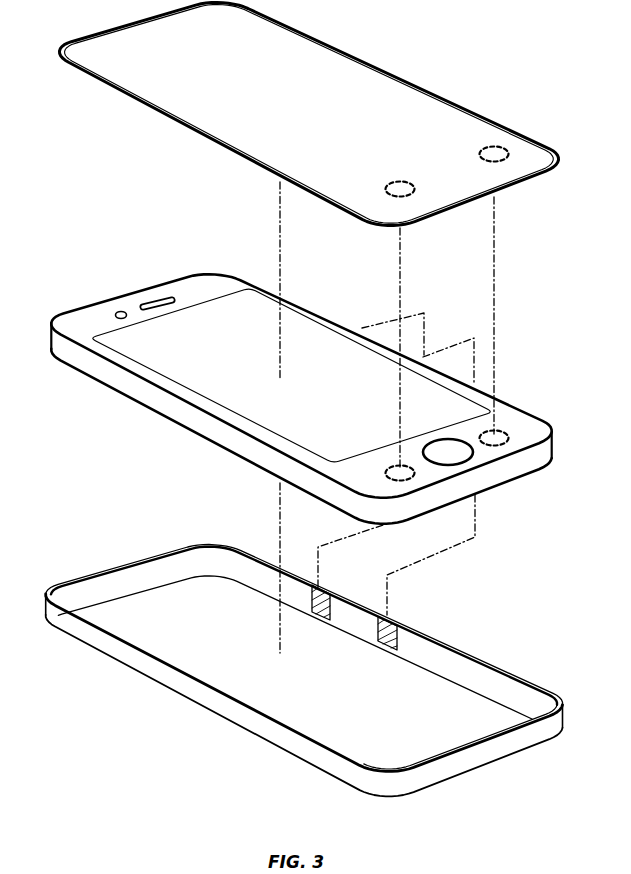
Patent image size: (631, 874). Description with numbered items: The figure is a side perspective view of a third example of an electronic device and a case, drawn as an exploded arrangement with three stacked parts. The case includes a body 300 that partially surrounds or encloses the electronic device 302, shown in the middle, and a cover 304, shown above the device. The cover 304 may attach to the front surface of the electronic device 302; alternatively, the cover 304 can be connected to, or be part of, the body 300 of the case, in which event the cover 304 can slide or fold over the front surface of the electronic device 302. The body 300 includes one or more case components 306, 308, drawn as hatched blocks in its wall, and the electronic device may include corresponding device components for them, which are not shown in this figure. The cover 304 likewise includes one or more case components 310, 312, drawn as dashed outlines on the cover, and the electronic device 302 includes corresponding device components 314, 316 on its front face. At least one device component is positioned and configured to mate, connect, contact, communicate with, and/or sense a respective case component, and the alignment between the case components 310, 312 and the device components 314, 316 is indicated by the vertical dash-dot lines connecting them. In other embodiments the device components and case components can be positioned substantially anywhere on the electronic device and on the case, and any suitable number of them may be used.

The body 300 is at (128, 561).
The electronic device 302 is at (229, 272).
The cover 304 is at (449, 99).
The case component 306 is at (317, 608).
The case component 308 is at (385, 636).
The case component 310 is at (391, 183).
The case component 312 is at (486, 147).
The device component 314 is at (388, 466).
The device component 316 is at (482, 431).